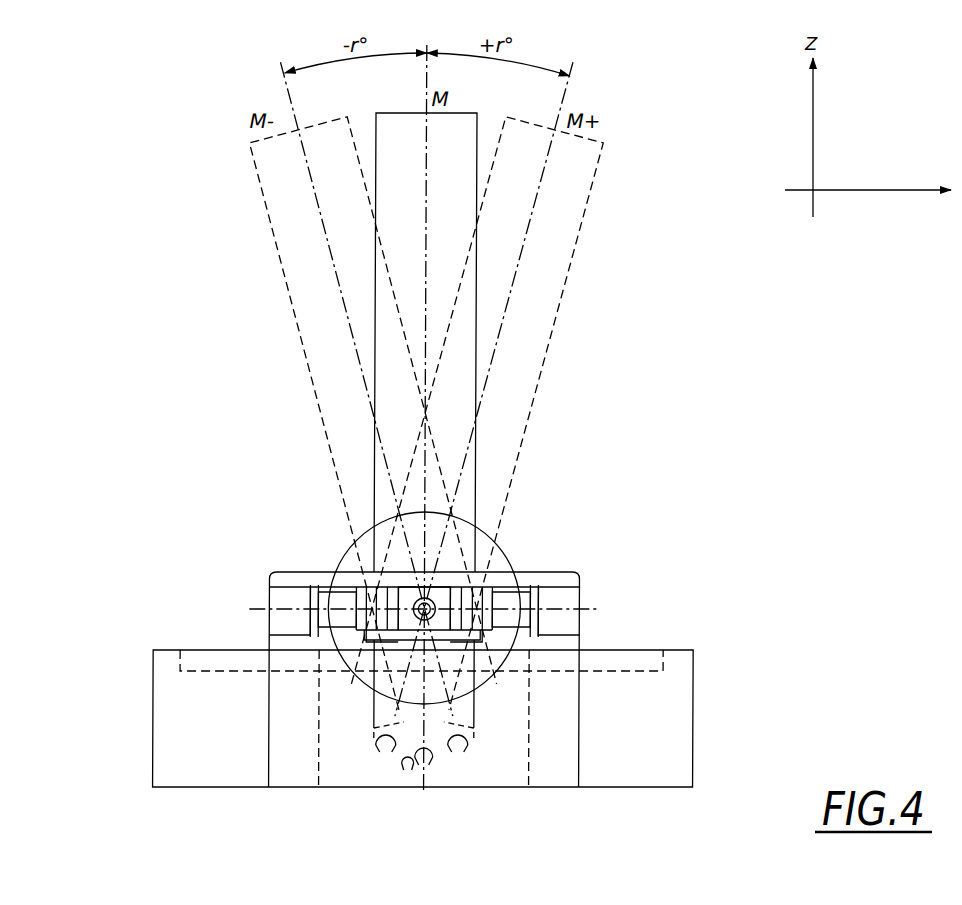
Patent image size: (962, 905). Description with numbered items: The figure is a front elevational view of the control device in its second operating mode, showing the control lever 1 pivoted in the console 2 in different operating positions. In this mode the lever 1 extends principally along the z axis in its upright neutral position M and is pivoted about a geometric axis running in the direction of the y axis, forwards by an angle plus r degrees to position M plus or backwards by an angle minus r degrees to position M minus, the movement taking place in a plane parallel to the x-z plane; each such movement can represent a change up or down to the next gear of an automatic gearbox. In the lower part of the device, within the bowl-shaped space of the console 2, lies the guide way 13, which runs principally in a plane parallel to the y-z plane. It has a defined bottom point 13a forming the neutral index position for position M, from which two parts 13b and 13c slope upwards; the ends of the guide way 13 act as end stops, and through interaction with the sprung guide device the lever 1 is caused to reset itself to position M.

The control lever 1 is at (524, 324).
The console 2 is at (255, 643).
The guide way 13 is at (423, 734).
The bottom point 13a is at (393, 792).
The upward sloping part 13b is at (493, 781).
The upward sloping part 13c is at (354, 781).